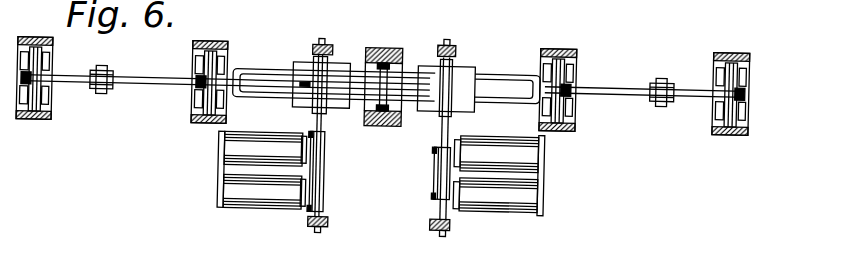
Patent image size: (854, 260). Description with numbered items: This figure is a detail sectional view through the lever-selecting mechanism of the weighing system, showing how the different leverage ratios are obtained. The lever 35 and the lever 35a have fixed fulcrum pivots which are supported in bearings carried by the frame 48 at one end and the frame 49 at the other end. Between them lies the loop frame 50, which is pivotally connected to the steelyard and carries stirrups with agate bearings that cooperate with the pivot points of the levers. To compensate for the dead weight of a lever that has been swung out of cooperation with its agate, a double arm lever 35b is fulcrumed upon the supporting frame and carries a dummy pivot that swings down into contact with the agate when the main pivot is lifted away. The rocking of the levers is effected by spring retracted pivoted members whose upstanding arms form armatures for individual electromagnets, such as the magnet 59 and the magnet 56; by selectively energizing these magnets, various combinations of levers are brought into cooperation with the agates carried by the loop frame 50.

The lever 35 is at (141, 81).
The lever 35a is at (614, 82).
The double arm lever 35b is at (246, 65).
The frame 48 is at (52, 113).
The frame 49 is at (736, 120).
The loop frame 50 is at (378, 119).
The magnet 56 is at (506, 204).
The magnet 59 is at (262, 204).